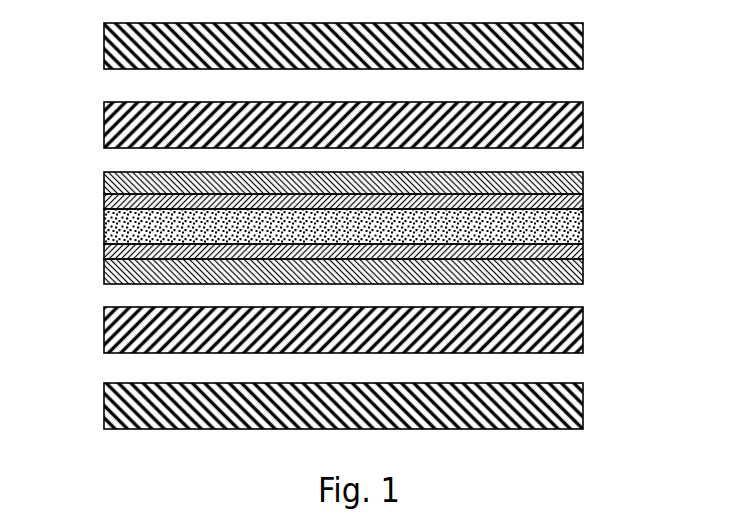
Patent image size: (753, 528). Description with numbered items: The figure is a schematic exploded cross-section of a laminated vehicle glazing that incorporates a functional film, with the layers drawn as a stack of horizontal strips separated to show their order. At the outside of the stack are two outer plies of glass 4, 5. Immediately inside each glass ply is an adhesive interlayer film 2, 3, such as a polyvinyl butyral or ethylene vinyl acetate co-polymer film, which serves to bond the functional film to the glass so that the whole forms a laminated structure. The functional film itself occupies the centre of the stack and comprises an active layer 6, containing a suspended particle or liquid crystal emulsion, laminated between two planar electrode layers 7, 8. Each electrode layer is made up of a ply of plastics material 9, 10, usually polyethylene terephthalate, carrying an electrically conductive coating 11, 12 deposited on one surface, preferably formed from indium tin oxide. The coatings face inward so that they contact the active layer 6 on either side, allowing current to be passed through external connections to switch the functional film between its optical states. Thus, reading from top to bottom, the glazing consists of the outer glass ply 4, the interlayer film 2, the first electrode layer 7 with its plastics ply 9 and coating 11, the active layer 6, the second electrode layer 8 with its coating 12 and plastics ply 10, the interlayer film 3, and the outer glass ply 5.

The adhesive interlayer film 2 is at (583, 125).
The adhesive interlayer film 3 is at (583, 323).
The outer ply of glass 4 is at (583, 49).
The outer ply of glass 5 is at (583, 407).
The active layer 6 is at (104, 225).
The electrode layer 7 is at (393, 192).
The electrode layer 8 is at (380, 270).
The ply of plastics material 9 is at (583, 174).
The ply of plastics material 10 is at (583, 277).
The electrically conductive coating 11 is at (583, 199).
The electrically conductive coating 12 is at (583, 250).